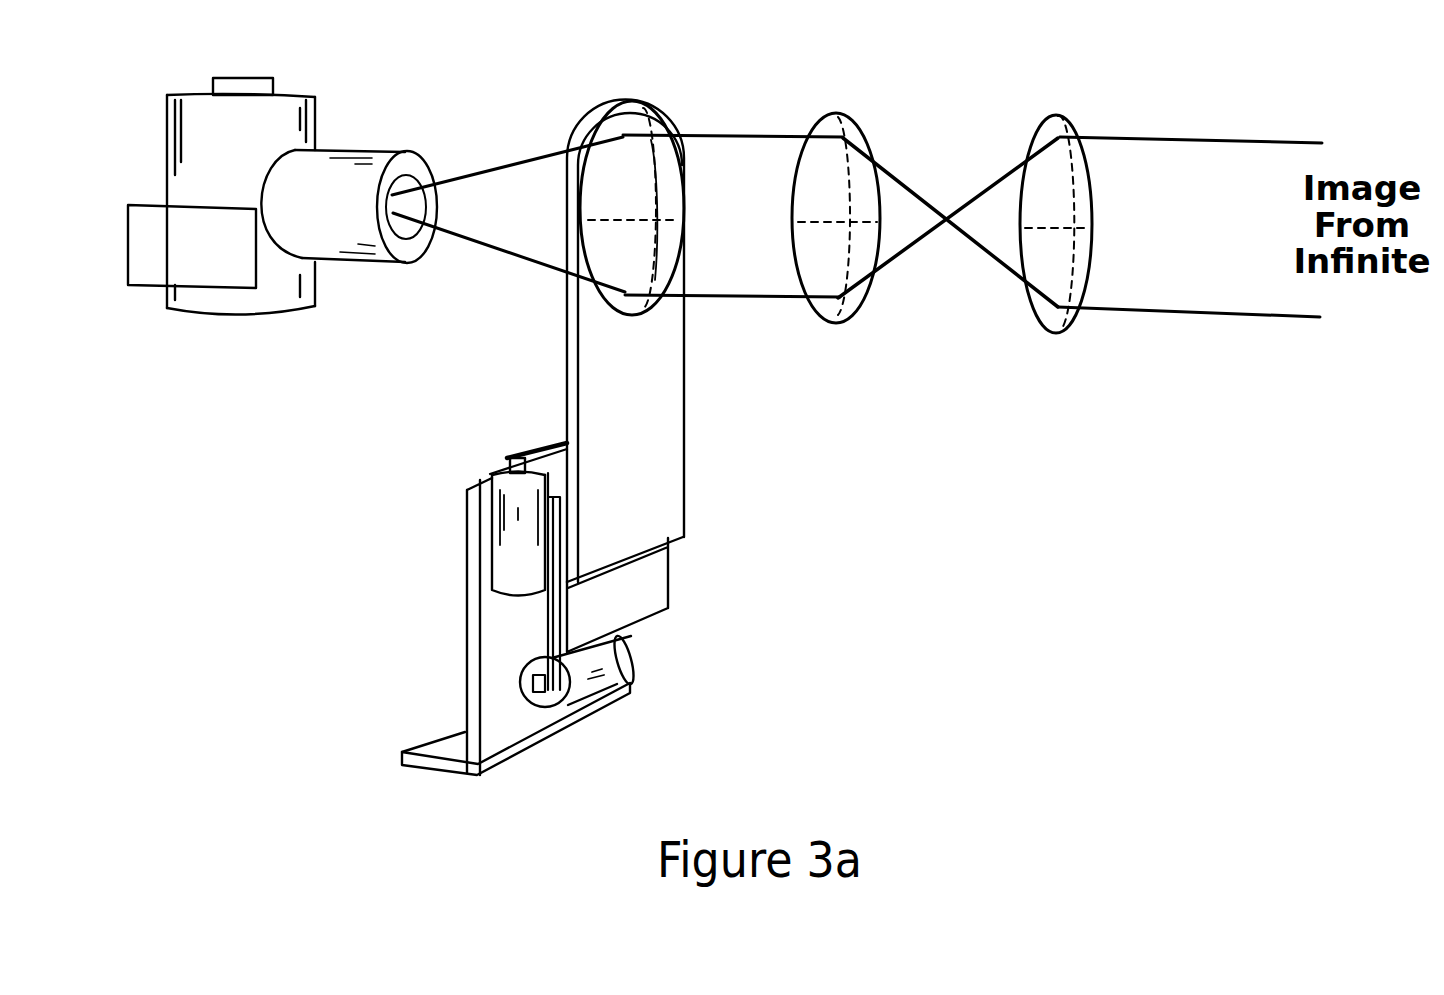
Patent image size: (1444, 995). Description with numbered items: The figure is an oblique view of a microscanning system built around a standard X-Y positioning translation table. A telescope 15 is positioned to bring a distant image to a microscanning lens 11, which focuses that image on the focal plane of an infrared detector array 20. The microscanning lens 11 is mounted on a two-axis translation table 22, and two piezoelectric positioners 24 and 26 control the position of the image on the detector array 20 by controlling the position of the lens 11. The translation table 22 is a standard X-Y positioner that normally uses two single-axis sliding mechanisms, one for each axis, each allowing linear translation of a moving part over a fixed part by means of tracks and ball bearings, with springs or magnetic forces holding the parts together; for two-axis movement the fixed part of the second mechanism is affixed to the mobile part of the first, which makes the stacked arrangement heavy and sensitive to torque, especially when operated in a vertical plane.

The microscanning lens 11 is at (637, 117).
The telescope 15 is at (1060, 113).
The infrared detector array 20 is at (317, 128).
The two-axis translation table 22 is at (527, 460).
The piezoelectric positioner 24 is at (490, 547).
The piezoelectric positioner 26 is at (553, 692).